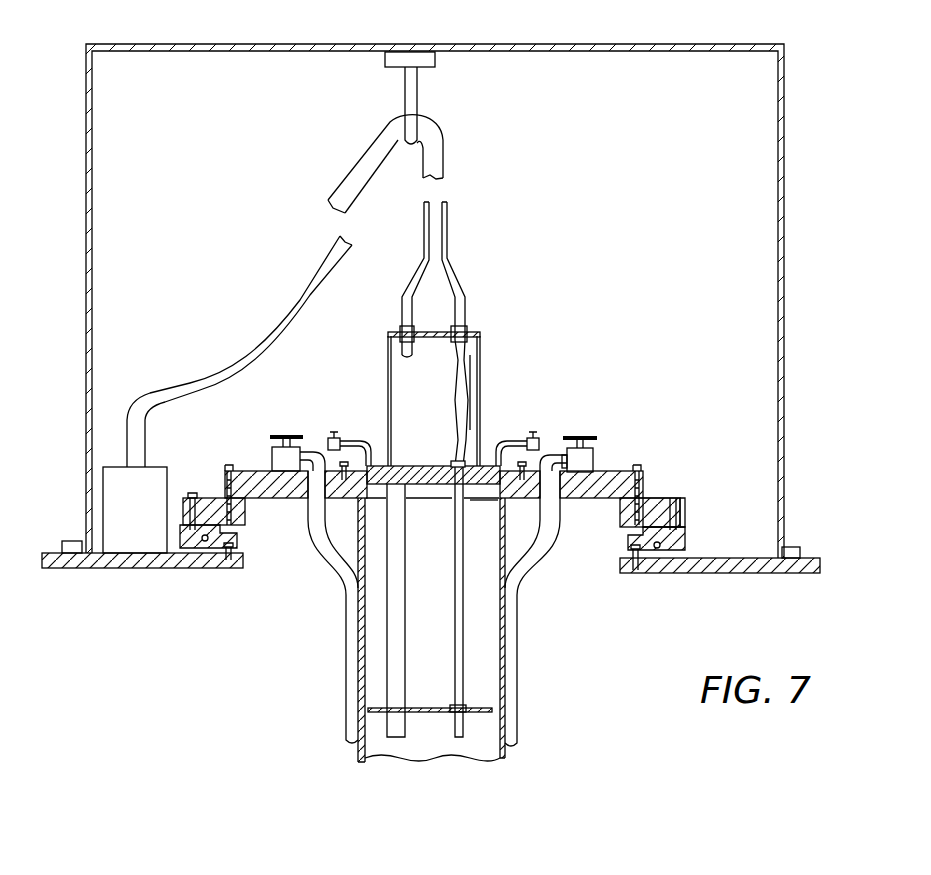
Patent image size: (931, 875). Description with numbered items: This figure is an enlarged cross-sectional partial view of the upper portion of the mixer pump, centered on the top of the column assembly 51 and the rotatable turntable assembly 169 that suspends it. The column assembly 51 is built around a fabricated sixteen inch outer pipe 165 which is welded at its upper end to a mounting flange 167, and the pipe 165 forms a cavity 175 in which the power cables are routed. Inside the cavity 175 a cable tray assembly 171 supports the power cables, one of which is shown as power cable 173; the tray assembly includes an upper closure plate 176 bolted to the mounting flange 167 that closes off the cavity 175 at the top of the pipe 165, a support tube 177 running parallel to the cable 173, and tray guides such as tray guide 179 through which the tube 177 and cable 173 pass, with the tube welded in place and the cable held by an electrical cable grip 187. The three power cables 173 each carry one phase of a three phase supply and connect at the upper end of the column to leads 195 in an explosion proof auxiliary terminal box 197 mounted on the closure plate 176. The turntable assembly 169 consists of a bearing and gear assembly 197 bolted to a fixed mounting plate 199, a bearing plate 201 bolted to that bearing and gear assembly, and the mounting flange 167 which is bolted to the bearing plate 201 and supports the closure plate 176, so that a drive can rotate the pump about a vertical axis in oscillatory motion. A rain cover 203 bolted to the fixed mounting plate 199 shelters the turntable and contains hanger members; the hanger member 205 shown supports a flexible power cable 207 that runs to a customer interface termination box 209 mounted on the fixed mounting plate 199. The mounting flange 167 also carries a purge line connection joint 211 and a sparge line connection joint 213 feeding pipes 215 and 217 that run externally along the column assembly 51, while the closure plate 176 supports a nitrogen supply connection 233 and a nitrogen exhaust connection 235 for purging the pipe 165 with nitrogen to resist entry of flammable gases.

The column assembly 51 is at (566, 713).
The outer pipe 165 is at (360, 635).
The mounting flange 167 is at (598, 496).
The rotatable turntable assembly 169 is at (692, 507).
The cable tray assembly 171 is at (380, 679).
The power cable 173 is at (465, 722).
The cavity 175 is at (482, 610).
The upper closure plate 176 is at (425, 468).
The support tube 177 is at (393, 650).
The tray guide 179 is at (440, 708).
The electrical cable grip 187 is at (458, 705).
The leads 195 is at (481, 342).
The auxiliary terminal box / bearing and gear assembly 197 is at (468, 330).
The fixed mounting plate 199 is at (810, 558).
The bearing plate 201 is at (656, 498).
The rain cover 203 is at (585, 44).
The hanger member 205 is at (417, 88).
The flexible power cable 207 is at (300, 290).
The customer interface termination box 209 is at (118, 512).
The purge line connection joint 211 is at (292, 437).
The sparge line connection joint 213 is at (585, 438).
The purge feed pipe 215 is at (312, 525).
The feed pipe 217 is at (525, 573).
The nitrogen supply connection 233 is at (352, 437).
The nitrogen exhaust connection 235 is at (514, 440).